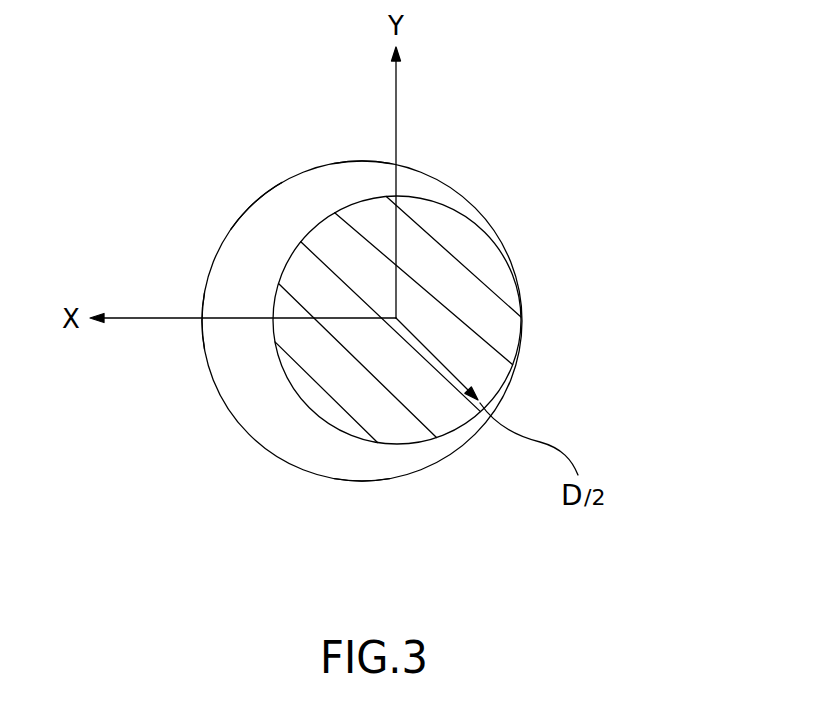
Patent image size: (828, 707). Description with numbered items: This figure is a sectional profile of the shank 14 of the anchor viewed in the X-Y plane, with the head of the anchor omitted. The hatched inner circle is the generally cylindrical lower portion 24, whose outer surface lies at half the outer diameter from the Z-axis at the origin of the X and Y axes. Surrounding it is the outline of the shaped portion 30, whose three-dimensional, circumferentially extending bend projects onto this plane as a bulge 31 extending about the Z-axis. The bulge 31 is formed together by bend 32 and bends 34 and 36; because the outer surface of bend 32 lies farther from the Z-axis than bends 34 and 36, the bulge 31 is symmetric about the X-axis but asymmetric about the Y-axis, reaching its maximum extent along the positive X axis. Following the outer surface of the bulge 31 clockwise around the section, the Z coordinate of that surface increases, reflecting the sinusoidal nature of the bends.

The shank 14 is at (568, 183).
The lower portion 24 is at (327, 218).
The shaped portion 30 is at (242, 442).
The bulge 31 is at (250, 197).
The bend 32 is at (193, 307).
The bend 34 is at (358, 490).
The bend 36 is at (360, 152).